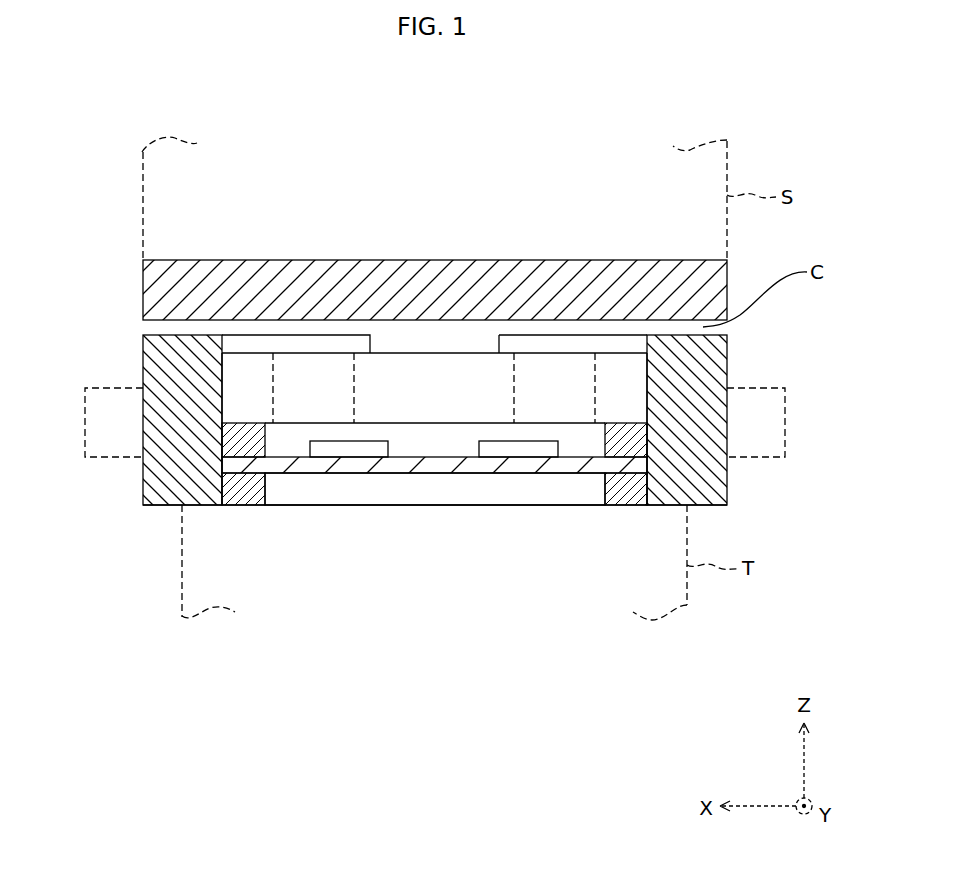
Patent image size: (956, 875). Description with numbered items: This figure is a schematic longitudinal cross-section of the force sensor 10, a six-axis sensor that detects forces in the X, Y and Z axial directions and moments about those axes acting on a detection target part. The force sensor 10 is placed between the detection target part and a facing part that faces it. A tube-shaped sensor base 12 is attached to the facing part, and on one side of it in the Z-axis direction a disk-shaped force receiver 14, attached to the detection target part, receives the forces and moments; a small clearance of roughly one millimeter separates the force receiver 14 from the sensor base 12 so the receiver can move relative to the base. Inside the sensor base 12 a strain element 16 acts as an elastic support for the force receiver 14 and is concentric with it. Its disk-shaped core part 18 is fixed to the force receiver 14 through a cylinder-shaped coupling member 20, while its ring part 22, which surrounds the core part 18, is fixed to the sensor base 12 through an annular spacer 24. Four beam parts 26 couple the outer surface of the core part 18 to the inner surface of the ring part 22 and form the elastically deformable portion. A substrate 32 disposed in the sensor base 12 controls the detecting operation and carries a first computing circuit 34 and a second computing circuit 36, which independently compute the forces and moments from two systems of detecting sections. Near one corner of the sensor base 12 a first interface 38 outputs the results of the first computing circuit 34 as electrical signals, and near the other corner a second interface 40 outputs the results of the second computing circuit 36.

The force sensor 10 is at (783, 133).
The sensor base 12 is at (143, 355).
The force receiver 14 is at (295, 259).
The strain element 16 is at (329, 353).
The core part 18 is at (514, 385).
The coupling member 20 is at (457, 332).
The ring part 22 is at (220, 366).
The spacer 24 is at (236, 438).
The beam parts 26 is at (273, 386).
The substrate 32 is at (440, 463).
The first computing circuit 34 is at (522, 450).
The second computing circuit 36 is at (357, 449).
The first interface 38 is at (757, 388).
The second interface 40 is at (96, 388).